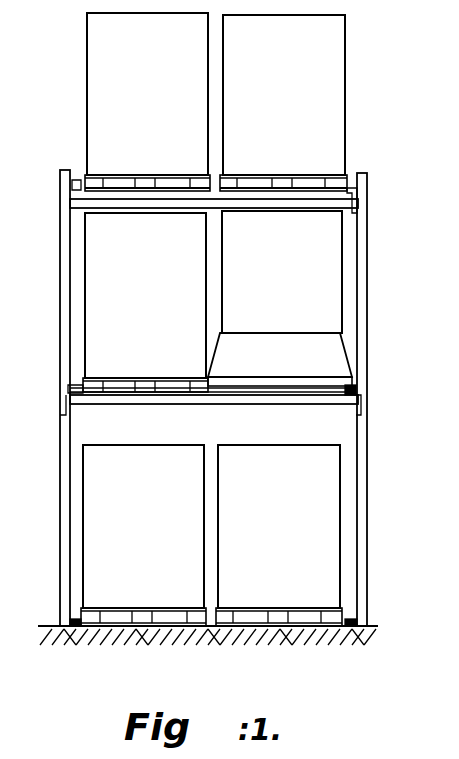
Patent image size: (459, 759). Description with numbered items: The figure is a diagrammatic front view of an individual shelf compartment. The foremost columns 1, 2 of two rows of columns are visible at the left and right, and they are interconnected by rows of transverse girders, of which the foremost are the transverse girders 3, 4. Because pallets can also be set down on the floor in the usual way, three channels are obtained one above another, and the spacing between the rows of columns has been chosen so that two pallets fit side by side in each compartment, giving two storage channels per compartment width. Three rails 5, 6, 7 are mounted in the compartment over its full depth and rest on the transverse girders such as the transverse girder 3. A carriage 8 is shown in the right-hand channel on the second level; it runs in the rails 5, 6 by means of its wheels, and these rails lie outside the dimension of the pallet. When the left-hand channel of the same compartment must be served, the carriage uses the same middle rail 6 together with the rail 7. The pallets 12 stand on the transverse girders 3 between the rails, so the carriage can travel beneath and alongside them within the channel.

The column 1 is at (66, 273).
The column 2 is at (364, 231).
The transverse girder 3 is at (278, 403).
The transverse girder 4 is at (318, 202).
The rail 5 is at (333, 396).
The rail 6 is at (204, 390).
The rail 7 is at (96, 393).
The carriage 8 is at (335, 362).
The pallet 12 is at (312, 187).